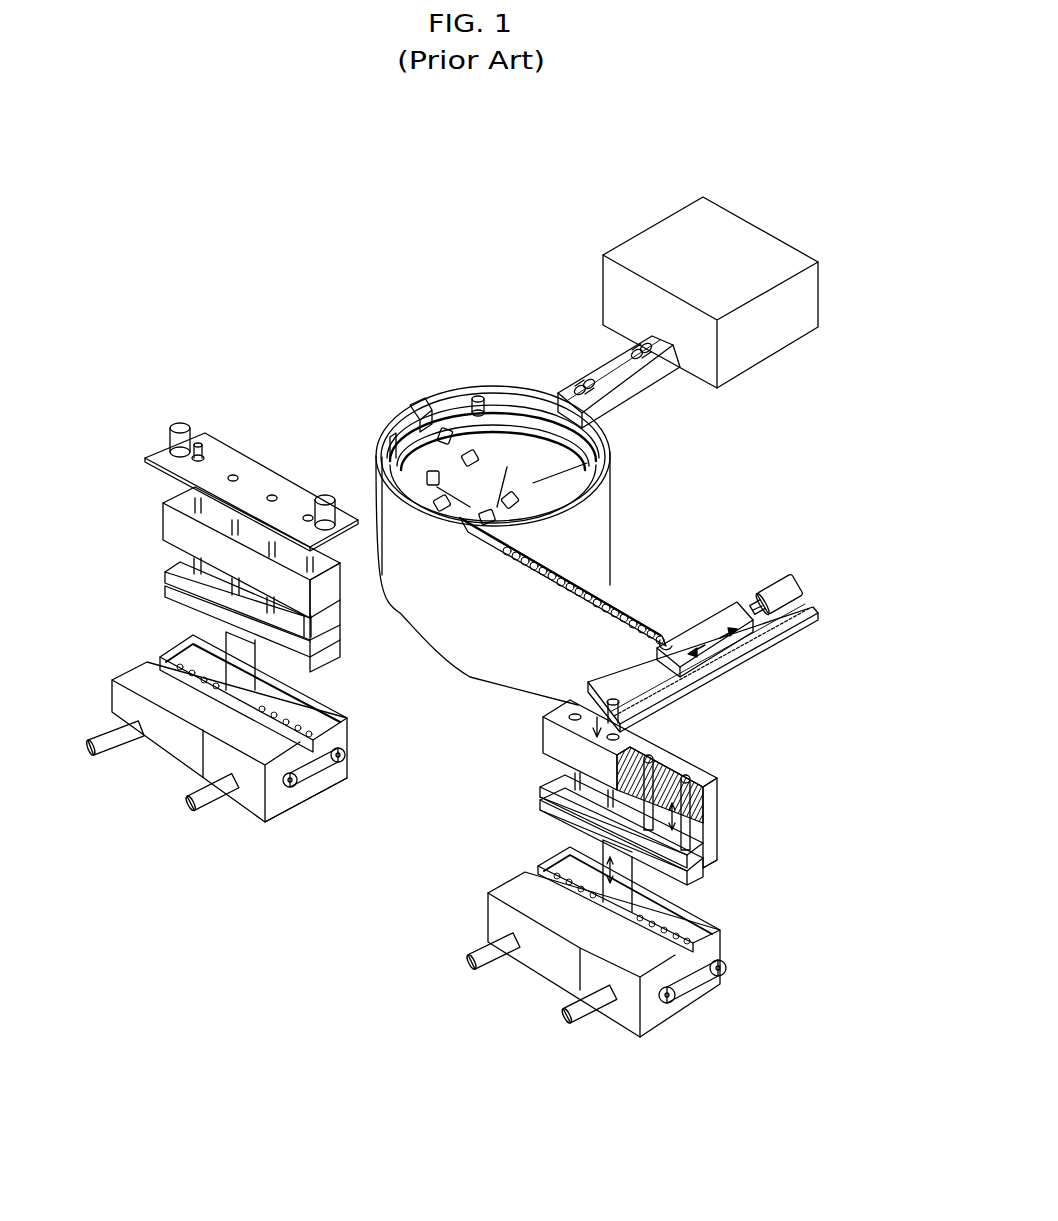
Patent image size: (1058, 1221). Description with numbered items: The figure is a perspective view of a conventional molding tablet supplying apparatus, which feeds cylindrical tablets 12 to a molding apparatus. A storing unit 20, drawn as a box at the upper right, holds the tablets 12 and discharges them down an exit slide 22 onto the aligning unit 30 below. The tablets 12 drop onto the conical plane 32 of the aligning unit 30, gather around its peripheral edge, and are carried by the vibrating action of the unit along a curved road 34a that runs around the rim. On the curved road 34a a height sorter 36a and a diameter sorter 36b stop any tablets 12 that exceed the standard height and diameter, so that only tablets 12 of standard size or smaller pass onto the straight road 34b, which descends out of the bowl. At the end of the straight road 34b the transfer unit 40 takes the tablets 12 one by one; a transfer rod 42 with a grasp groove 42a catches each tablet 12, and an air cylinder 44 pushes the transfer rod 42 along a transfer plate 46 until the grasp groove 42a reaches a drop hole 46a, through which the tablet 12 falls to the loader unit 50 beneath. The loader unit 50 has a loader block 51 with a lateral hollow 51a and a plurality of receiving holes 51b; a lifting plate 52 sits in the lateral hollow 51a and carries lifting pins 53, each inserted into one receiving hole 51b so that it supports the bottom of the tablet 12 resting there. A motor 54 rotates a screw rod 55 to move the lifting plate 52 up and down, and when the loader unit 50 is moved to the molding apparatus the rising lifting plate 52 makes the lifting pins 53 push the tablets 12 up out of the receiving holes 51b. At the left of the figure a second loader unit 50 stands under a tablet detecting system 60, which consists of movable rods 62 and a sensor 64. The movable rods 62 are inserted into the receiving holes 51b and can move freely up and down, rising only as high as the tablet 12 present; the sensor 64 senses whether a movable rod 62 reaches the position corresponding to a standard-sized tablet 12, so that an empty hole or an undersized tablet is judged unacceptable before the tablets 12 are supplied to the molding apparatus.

The tablet 12 is at (478, 397).
The storing unit 20 is at (783, 357).
The exit slide 22 is at (633, 377).
The aligning unit 30 is at (462, 625).
The conical plane 32 is at (598, 488).
The curved road 34a is at (505, 410).
The straight road 34b is at (598, 578).
The height sorter 36a is at (414, 408).
The diameter sorter 36b is at (391, 436).
The transfer unit 40 is at (698, 685).
The transfer rod 42 is at (797, 612).
The grasp groove 42a is at (668, 640).
The air cylinder 44 is at (780, 585).
The transfer plate 46 is at (800, 605).
The drop hole 46a is at (620, 705).
The loader unit 50 is at (532, 751).
The loader block 51 is at (713, 800).
The lateral hollow 51a is at (557, 768).
The receiving hole 51b is at (570, 717).
The lifting plate 52 is at (700, 870).
The lifting pin 53 is at (687, 828).
The motor 54 is at (627, 1003).
The screw rod 55 is at (567, 850).
The tablet detecting system 60 is at (153, 440).
The movable rod 62 is at (196, 455).
The sensor 64 is at (188, 435).